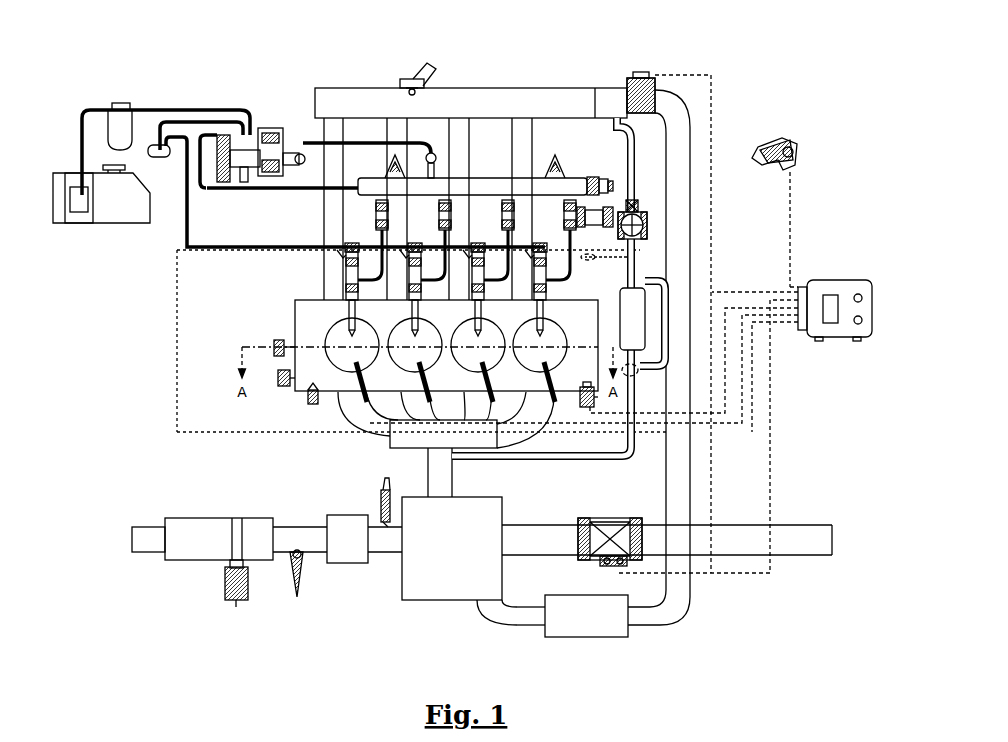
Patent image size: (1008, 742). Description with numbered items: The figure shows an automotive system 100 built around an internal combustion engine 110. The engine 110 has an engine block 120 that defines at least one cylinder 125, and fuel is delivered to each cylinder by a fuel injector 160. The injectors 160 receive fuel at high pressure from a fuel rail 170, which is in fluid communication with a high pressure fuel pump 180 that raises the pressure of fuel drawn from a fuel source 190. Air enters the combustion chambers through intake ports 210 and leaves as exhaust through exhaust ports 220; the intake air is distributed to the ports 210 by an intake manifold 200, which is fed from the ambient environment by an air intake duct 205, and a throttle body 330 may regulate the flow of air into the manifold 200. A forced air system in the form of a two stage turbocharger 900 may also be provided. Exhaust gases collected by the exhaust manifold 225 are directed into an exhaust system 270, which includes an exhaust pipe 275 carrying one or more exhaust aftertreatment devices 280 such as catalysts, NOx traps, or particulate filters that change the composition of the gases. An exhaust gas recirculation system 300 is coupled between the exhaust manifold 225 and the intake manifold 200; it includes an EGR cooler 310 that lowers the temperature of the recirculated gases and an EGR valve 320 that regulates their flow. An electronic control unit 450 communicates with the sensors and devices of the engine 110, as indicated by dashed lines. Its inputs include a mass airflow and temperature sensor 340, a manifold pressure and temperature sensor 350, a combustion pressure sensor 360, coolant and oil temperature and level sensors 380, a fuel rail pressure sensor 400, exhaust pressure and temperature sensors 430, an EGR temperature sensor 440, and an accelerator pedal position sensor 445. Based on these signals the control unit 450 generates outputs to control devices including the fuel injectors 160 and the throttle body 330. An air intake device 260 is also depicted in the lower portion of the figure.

The automotive system 100 is at (227, 65).
The internal combustion engine 110 is at (550, 71).
The engine block 120 is at (333, 303).
The cylinder 125 is at (562, 330).
The fuel injector 160 is at (347, 284).
The fuel rail 170 is at (345, 197).
The high pressure fuel pump 180 is at (270, 132).
The fuel source 190 is at (123, 212).
The intake manifold 200 is at (463, 100).
The air intake duct 205 is at (690, 500).
The intake port 210 is at (333, 306).
The exhaust port 220 is at (353, 392).
The exhaust manifold 225 is at (381, 508).
The air intake device 260 is at (610, 628).
The exhaust system 270 is at (198, 498).
The exhaust pipe 275 is at (148, 540).
The exhaust aftertreatment device 280 is at (192, 540).
The exhaust gas recirculation system 300 is at (606, 475).
The EGR cooler 310 is at (636, 336).
The EGR valve 320 is at (640, 204).
The throttle body 330 is at (644, 75).
The mass airflow and temperature sensor 340 is at (603, 563).
The manifold pressure and temperature sensor 350 is at (403, 73).
The combustion pressure sensor 360 is at (366, 404).
The coolant and oil temperature and level sensors 380 is at (286, 388).
The fuel rail pressure sensor 400 is at (636, 168).
The exhaust pressure and temperature sensors 430 is at (297, 566).
The EGR temperature sensor 440 is at (640, 246).
The accelerator pedal position sensor 445 is at (793, 140).
The electronic control unit 450 is at (841, 280).
The two stage turbocharger 900 is at (452, 524).